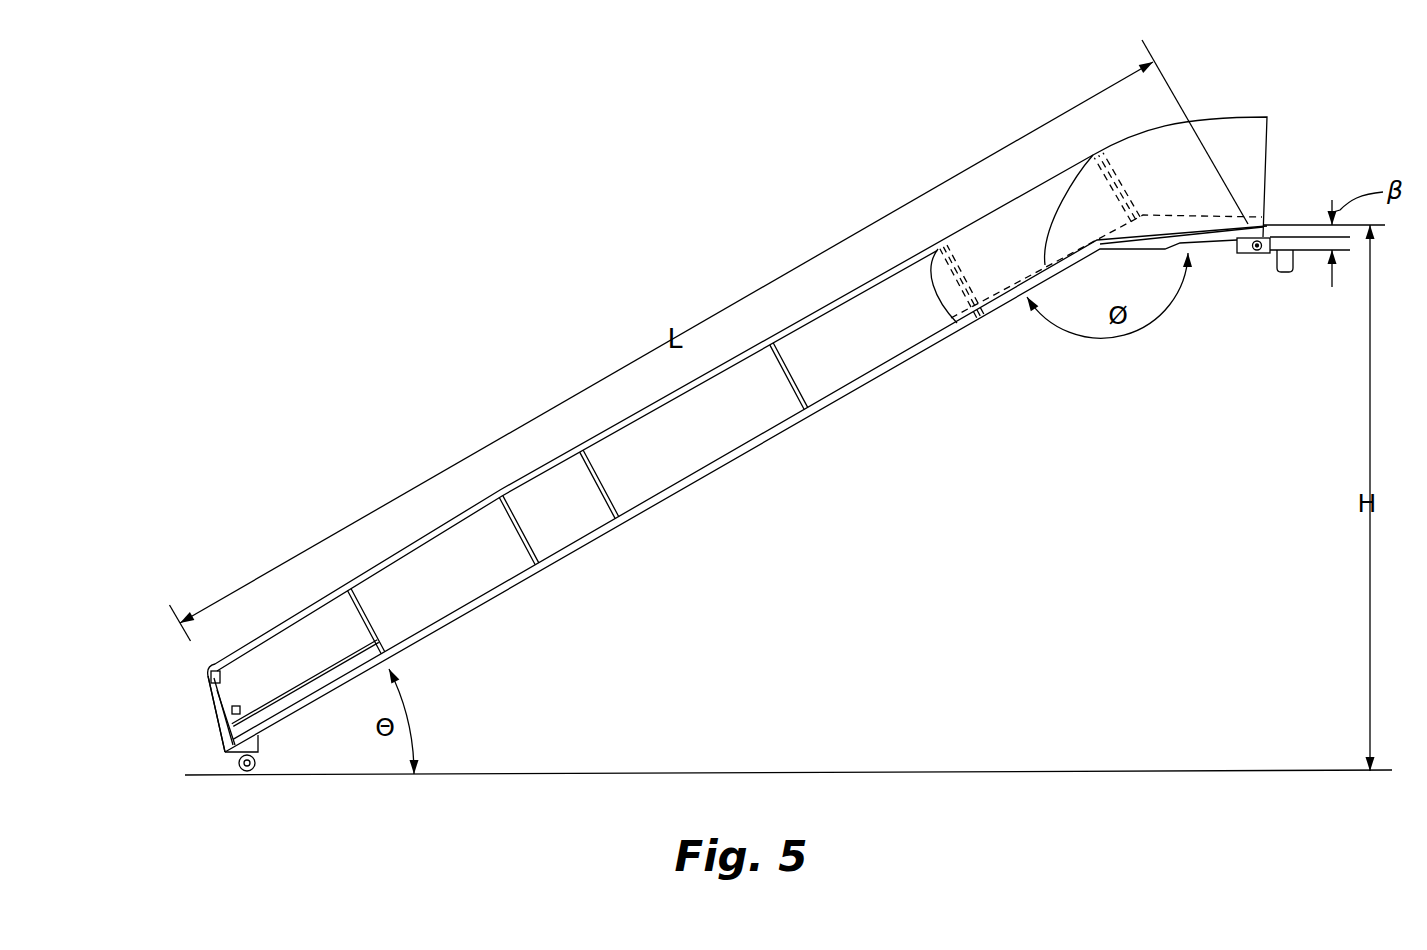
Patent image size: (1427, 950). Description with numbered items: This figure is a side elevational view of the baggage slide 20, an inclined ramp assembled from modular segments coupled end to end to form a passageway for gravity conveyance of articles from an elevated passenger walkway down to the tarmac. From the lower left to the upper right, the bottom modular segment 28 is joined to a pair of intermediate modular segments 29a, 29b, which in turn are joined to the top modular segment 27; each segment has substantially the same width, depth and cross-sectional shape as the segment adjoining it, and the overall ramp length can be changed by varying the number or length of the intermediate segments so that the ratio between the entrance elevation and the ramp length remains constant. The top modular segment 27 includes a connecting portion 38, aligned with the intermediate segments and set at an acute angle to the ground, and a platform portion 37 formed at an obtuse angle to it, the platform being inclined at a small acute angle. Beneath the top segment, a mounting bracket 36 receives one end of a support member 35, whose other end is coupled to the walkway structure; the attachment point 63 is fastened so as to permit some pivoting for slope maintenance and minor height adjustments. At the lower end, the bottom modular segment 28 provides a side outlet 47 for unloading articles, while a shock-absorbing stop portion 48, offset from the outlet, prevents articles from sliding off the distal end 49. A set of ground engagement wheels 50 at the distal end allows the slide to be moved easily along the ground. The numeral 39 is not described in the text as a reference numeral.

The baggage slide 20 is at (1290, 120).
The top modular segment 27 is at (995, 307).
The bottom modular segment 28 is at (457, 613).
The intermediate modular segment 29a is at (590, 538).
The intermediate modular segment 29b is at (722, 463).
The support member 35 is at (1292, 268).
The mounting bracket 36 is at (1238, 238).
The platform portion 37 is at (1185, 228).
The connecting portion 38 is at (1094, 155).
The hook end 39 is at (1232, 233).
The outlet 47 is at (282, 670).
The stop portion 48 is at (211, 697).
The distal end 49 is at (213, 740).
The ground engagement wheels 50 is at (241, 774).
The attachment point 63 is at (1258, 255).